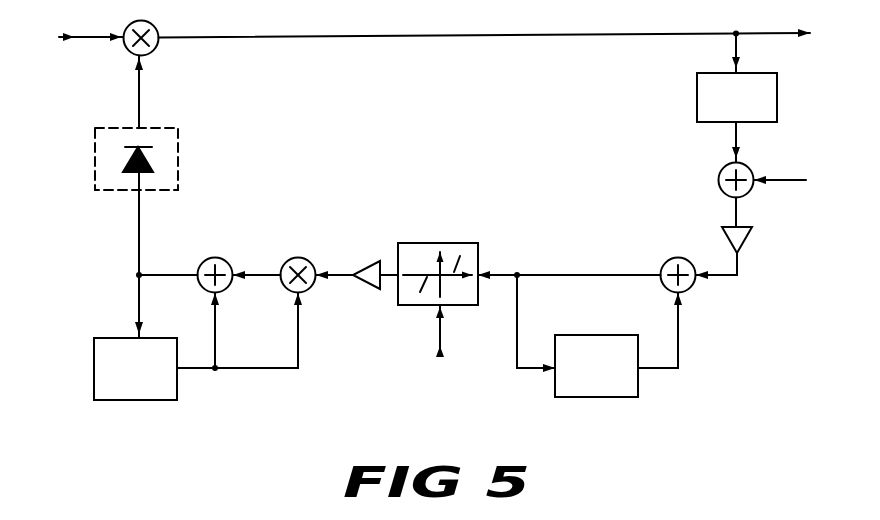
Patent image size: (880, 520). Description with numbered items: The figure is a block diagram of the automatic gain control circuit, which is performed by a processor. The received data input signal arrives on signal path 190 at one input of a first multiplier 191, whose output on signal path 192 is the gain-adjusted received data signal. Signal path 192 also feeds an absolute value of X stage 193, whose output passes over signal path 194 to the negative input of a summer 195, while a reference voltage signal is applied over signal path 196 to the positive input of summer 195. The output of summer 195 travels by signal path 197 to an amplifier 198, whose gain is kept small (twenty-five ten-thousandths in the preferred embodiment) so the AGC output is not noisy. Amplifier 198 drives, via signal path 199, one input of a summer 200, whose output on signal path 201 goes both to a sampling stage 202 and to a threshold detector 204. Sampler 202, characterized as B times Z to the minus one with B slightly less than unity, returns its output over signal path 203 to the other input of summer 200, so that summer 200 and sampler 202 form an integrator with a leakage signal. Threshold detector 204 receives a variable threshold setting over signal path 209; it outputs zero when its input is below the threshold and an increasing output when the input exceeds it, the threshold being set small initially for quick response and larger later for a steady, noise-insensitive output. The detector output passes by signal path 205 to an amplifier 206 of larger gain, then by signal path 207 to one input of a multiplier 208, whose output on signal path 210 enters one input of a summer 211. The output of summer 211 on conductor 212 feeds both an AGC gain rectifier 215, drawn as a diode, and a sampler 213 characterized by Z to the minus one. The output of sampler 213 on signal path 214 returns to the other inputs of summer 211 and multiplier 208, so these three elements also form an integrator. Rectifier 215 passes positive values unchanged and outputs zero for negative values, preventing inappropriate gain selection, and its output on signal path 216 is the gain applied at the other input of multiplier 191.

The signal path 190 is at (82, 34).
The first multiplier 191 is at (157, 27).
The signal path 192 is at (394, 36).
The absolute value of X stage 193 is at (748, 73).
The signal path 194 is at (733, 129).
The summer 195 is at (718, 178).
The signal path 196 is at (782, 182).
The signal path 197 is at (740, 217).
The amplifier 198 is at (744, 240).
The signal path 199 is at (721, 279).
The summer 200 is at (667, 258).
The signal path 201 is at (576, 270).
The sampling stage (sampler) 202 is at (578, 335).
The signal path 203 is at (679, 360).
The threshold detector 204 is at (437, 243).
The signal path 205 is at (388, 280).
The amplifier 206 is at (366, 263).
The signal path 207 is at (342, 281).
The multiplier 208 is at (302, 258).
The signal path 209 is at (444, 334).
The signal path 210 is at (275, 280).
The summer 211 is at (217, 258).
The conductor (signal path) 212 is at (148, 275).
The sampler 213 is at (152, 337).
The signal path 214 is at (233, 368).
The AGC gain rectifier 215 is at (181, 152).
The signal path 216 is at (143, 108).